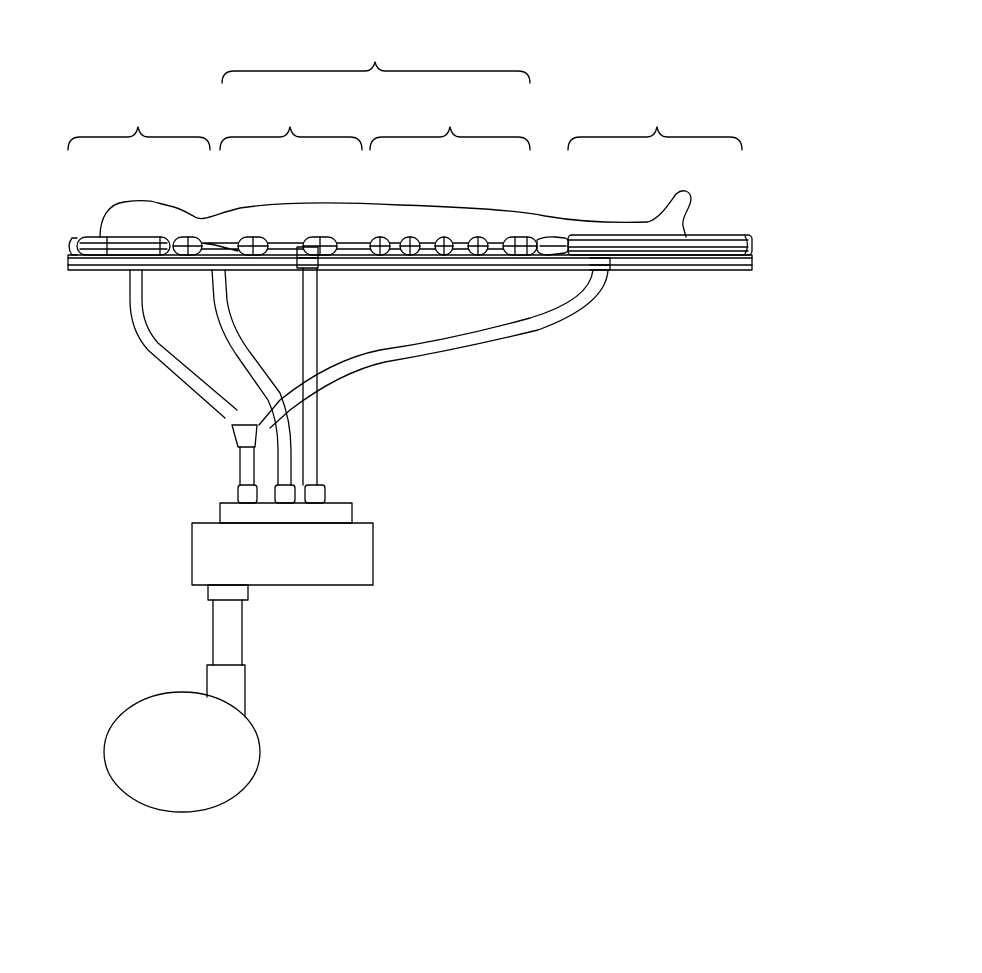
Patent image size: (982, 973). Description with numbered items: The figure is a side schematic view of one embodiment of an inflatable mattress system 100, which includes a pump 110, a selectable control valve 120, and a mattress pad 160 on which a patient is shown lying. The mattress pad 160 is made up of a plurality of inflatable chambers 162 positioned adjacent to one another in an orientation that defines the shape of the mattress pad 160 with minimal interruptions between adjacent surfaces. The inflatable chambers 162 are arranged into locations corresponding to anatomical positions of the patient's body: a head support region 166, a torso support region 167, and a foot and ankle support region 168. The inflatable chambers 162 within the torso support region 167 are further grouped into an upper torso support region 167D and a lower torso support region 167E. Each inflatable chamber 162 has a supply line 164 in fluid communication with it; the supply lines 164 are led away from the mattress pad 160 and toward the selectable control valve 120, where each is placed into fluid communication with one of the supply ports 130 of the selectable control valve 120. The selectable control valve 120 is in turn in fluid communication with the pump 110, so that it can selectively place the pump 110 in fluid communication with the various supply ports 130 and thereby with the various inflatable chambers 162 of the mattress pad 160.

The inflatable mattress system 100 is at (738, 72).
The pump 110 is at (250, 780).
The selectable control valve 120 is at (375, 553).
The supply ports 130 is at (236, 496).
The mattress pad 160 is at (740, 233).
The inflatable chambers 162 is at (88, 238).
The supply line 164 is at (226, 304).
The head support region 166 is at (139, 122).
The torso support region 167 is at (376, 55).
The upper torso support region 167D is at (291, 122).
The lower torso support region 167E is at (450, 122).
The foot and ankle support region 168 is at (655, 122).